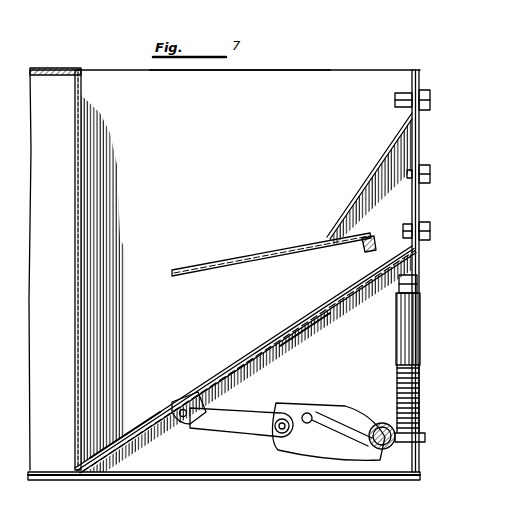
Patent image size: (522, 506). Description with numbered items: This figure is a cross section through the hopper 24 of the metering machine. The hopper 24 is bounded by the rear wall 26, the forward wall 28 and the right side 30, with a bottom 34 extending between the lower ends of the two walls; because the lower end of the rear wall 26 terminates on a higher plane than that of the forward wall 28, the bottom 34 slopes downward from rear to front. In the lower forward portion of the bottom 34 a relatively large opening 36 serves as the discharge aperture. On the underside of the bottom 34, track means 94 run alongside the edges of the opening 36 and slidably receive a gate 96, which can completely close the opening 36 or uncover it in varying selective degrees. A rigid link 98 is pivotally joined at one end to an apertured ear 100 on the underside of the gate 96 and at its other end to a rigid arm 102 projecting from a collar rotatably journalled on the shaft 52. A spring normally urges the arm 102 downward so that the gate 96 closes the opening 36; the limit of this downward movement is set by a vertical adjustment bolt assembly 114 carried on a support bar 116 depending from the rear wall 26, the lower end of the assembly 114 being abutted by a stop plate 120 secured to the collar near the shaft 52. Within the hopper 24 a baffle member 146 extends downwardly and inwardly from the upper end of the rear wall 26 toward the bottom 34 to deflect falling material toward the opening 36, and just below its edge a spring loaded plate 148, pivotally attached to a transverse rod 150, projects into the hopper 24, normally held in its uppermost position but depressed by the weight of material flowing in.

The hopper 24 is at (342, 68).
The rear wall 26 is at (420, 148).
The forward wall 28 is at (82, 95).
The right side 30 is at (300, 78).
The bottom 34 is at (248, 348).
The opening 36 is at (146, 412).
The shaft 52 is at (379, 462).
The track means 94 is at (300, 330).
The gate 96 is at (186, 396).
The rigid link 98 is at (232, 430).
The apertured ear 100 is at (178, 430).
The rigid arm 102 is at (328, 452).
The adjustment bolt assembly 114 is at (420, 370).
The support bar 116 is at (425, 222).
The stop plate 120 is at (425, 438).
The baffle member 146 is at (358, 182).
The plate 148 is at (262, 256).
The rod 150 is at (368, 254).